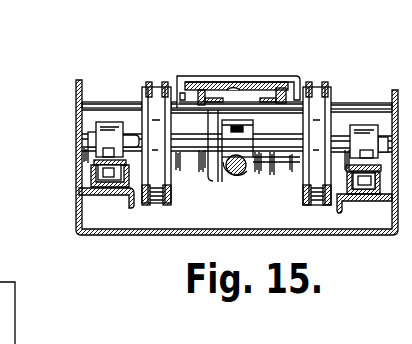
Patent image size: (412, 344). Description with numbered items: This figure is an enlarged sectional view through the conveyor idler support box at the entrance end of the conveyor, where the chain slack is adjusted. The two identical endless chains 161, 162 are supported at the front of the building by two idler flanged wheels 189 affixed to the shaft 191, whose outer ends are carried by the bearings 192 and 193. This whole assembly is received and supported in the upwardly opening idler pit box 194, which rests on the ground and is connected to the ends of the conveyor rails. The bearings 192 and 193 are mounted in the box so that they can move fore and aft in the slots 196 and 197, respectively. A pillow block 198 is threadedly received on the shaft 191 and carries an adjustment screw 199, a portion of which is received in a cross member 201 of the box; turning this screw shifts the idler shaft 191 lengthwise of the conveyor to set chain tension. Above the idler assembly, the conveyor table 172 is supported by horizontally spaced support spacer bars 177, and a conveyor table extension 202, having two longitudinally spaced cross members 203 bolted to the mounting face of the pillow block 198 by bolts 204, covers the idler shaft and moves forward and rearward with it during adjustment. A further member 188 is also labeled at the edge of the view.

The idler pit box 194 is at (74, 149).
The idler flanged wheels 189 is at (141, 97).
The support spacer bars 177 is at (99, 101).
The shaft 191 is at (195, 118).
The bearing 193 is at (107, 122).
The slot 197 is at (108, 182).
The bearing 192 is at (361, 125).
The slot 196 is at (364, 189).
The endless chain 161 is at (149, 82).
The endless chain 162 is at (320, 88).
The conveyor table 172 is at (289, 77).
The conveyor table extension 202 is at (241, 86).
The cross members 203 is at (210, 170).
The bolts 204 is at (244, 132).
The pillow block 198 is at (224, 160).
The adjustment screw 199 is at (257, 172).
The cross member 201 is at (272, 172).
The support member 188 is at (4, 270).